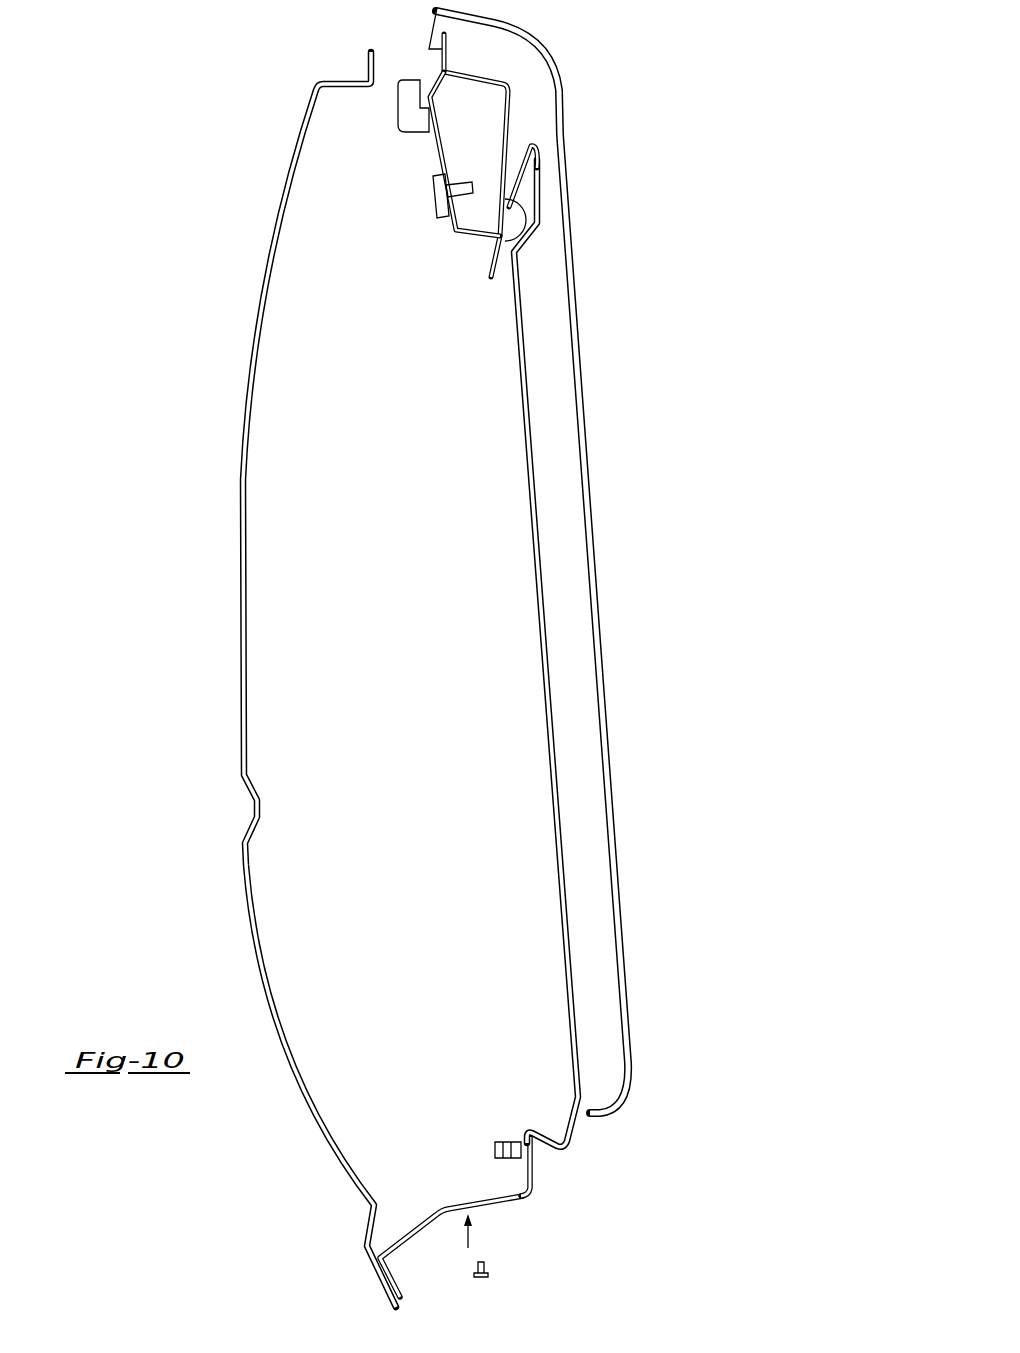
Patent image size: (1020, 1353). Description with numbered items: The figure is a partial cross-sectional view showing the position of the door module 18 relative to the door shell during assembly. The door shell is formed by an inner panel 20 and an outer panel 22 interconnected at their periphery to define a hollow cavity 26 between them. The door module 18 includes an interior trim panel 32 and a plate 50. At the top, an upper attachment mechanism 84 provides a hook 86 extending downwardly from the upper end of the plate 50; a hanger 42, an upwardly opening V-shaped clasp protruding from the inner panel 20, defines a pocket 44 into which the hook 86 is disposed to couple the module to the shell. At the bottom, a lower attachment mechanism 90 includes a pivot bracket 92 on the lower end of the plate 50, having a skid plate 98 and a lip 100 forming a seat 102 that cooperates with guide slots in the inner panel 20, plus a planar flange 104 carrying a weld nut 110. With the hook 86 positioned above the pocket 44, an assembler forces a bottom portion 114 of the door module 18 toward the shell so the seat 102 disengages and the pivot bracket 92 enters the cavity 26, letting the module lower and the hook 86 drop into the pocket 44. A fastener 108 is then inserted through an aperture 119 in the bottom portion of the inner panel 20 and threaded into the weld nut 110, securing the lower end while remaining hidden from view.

The door module 18 is at (590, 95).
The inner panel 20 is at (416, 1240).
The outer panel 22 is at (242, 594).
The hollow cavity 26 is at (328, 940).
The interior trim panel 32 is at (570, 309).
The hanger 42 is at (490, 238).
The pocket 44 is at (519, 176).
The plate 50 is at (537, 584).
The upper attachment mechanism 84 is at (522, 124).
The hook 86 is at (527, 143).
The lower attachment mechanism 90 is at (456, 1147).
The pivot bracket 92 is at (546, 1120).
The skid plate 98 is at (590, 1142).
The lip 100 is at (522, 1128).
The seat 102 is at (534, 1150).
The flange 104 is at (493, 1162).
The fastener 108 is at (488, 1263).
The weld nut 110 is at (497, 1140).
The bottom portion 114 is at (645, 988).
The aperture 119 is at (462, 1207).